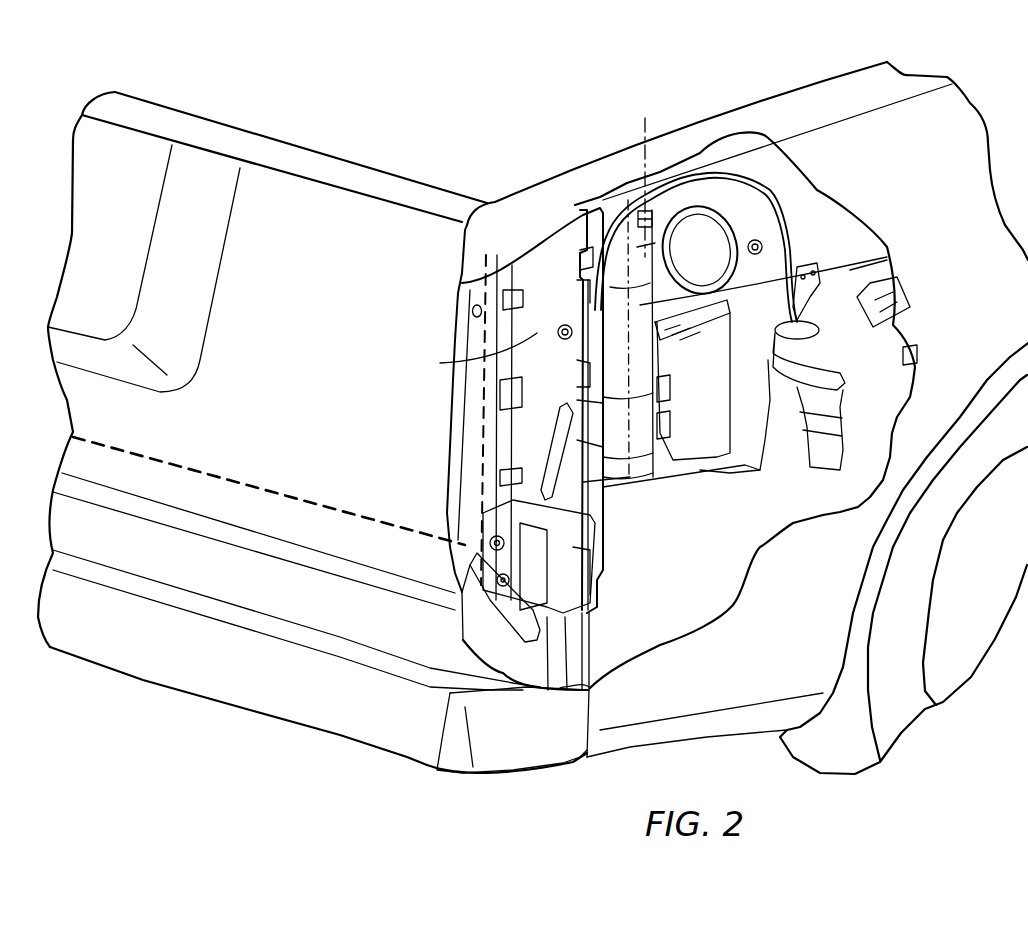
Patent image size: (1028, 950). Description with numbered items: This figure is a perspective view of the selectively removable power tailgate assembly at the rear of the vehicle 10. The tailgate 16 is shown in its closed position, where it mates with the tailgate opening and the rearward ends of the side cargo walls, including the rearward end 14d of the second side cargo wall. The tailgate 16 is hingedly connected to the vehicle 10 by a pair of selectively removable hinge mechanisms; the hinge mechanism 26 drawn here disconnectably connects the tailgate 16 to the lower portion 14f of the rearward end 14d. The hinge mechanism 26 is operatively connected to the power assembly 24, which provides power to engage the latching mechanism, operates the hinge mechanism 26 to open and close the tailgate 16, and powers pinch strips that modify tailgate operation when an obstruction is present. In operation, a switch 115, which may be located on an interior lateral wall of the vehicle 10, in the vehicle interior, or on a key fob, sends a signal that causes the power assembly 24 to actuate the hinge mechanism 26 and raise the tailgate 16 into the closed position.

The vehicle 10 is at (685, 117).
The tailgate 16 is at (330, 352).
The rearward end 14d is at (537, 334).
The lower portion 14f is at (468, 593).
The power assembly 24 is at (783, 217).
The hinge mechanism 26 is at (487, 627).
The switch 115 is at (668, 232).